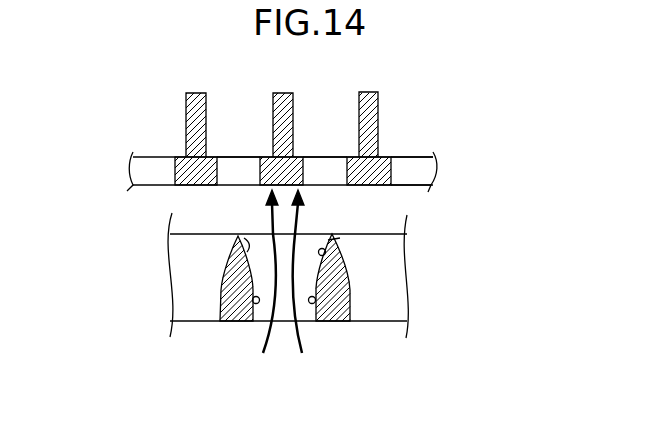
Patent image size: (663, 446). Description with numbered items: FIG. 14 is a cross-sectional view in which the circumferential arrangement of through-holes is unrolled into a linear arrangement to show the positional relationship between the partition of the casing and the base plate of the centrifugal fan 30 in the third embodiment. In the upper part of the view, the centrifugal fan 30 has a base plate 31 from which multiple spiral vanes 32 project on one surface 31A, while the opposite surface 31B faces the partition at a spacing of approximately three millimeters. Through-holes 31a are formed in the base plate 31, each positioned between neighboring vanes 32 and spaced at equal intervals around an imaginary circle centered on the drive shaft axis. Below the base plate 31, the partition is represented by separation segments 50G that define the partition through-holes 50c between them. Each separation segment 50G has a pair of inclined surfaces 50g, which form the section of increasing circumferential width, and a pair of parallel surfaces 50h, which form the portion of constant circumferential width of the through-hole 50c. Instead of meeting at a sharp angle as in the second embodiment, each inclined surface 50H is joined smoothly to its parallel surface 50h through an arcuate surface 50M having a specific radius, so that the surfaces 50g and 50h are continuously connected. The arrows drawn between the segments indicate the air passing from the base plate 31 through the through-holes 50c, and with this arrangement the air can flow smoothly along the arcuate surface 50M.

The centrifugal fan 30 is at (433, 152).
The base plate 31 is at (405, 152).
The through-hole 31a is at (318, 163).
The one surface 31A is at (415, 157).
The opposite surface 31B is at (415, 185).
The spiral vane 32 is at (377, 105).
The separation segment 50G is at (338, 307).
The arcuate surface 50M is at (220, 281).
The parallel surface 50h is at (219, 298).
The inclined surface 50H is at (246, 240).
The partition through-hole 50c is at (305, 252).
The inclined surface 50g is at (333, 242).